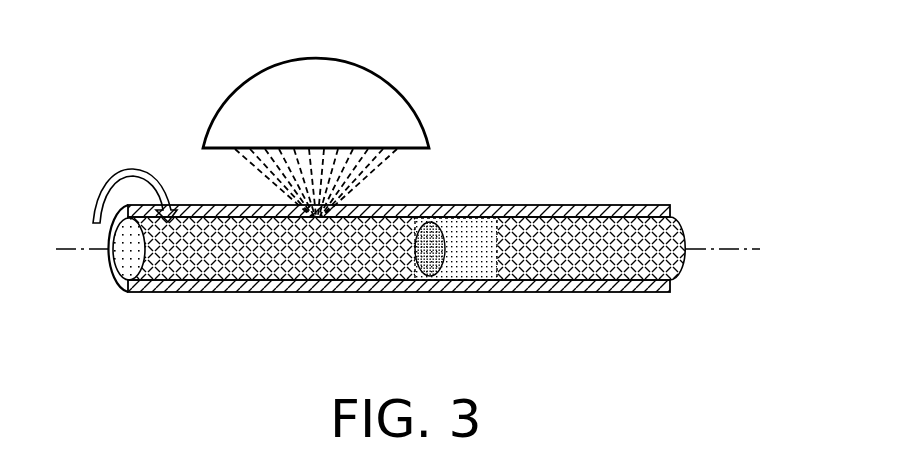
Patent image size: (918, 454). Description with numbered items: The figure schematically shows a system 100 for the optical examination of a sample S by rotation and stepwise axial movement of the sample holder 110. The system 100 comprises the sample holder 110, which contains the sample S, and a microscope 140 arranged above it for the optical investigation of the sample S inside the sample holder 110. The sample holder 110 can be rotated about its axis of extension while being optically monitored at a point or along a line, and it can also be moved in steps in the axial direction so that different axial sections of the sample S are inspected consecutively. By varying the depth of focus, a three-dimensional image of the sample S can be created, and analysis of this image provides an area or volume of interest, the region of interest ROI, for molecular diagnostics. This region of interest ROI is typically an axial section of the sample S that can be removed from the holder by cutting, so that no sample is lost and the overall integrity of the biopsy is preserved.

The system 100 is at (690, 106).
The sample holder 110 is at (493, 198).
The microscope 140 is at (222, 77).
The sample S is at (617, 228).
The region of interest ROI is at (465, 268).